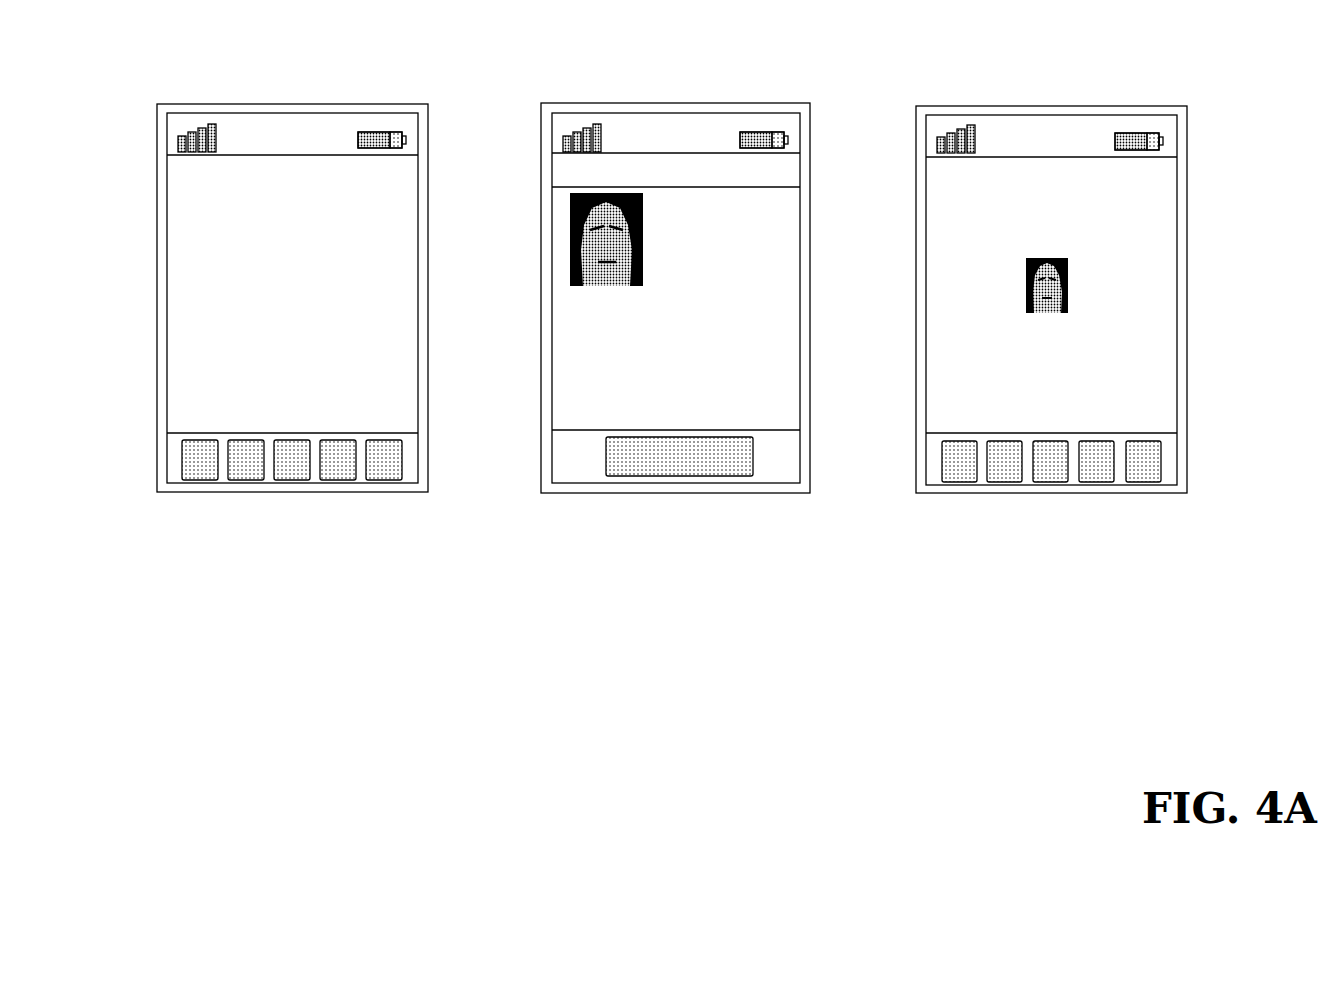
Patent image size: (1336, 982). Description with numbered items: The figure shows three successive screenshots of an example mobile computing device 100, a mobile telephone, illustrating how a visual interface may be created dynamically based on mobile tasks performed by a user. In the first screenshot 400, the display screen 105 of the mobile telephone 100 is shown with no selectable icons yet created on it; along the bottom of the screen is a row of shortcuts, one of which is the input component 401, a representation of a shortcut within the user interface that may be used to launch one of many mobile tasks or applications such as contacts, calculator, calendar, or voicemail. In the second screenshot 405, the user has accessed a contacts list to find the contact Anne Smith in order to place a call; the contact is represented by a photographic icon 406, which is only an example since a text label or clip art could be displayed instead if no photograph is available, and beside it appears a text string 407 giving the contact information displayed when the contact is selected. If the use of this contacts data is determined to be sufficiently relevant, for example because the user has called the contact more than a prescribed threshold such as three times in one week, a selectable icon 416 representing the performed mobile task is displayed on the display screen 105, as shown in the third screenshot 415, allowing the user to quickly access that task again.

The mobile computing device 100 is at (242, 104).
The display screen 105 is at (216, 185).
The screenshot 400 is at (275, 310).
The input component 401 is at (387, 480).
The screenshot 405 is at (675, 277).
The photographic icon 406 is at (585, 195).
The text string 407 is at (678, 202).
The screenshot 415 is at (1051, 279).
The selectable icon 416 is at (1055, 259).